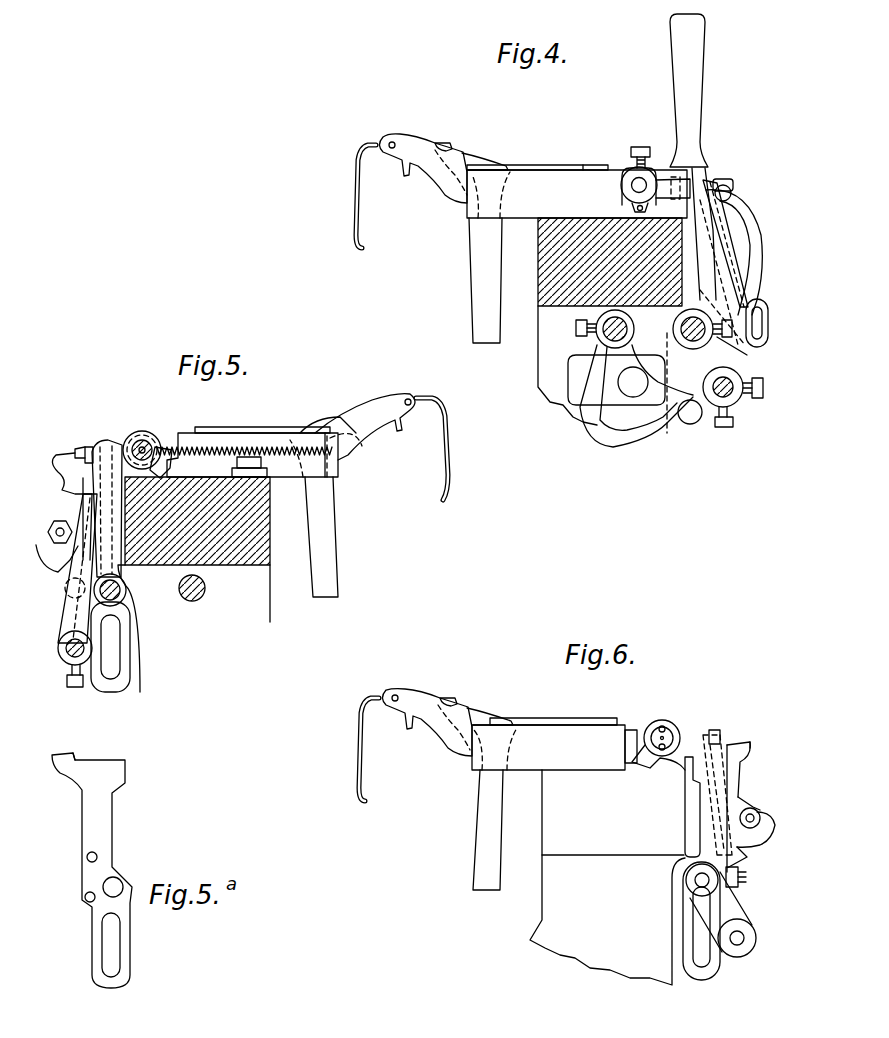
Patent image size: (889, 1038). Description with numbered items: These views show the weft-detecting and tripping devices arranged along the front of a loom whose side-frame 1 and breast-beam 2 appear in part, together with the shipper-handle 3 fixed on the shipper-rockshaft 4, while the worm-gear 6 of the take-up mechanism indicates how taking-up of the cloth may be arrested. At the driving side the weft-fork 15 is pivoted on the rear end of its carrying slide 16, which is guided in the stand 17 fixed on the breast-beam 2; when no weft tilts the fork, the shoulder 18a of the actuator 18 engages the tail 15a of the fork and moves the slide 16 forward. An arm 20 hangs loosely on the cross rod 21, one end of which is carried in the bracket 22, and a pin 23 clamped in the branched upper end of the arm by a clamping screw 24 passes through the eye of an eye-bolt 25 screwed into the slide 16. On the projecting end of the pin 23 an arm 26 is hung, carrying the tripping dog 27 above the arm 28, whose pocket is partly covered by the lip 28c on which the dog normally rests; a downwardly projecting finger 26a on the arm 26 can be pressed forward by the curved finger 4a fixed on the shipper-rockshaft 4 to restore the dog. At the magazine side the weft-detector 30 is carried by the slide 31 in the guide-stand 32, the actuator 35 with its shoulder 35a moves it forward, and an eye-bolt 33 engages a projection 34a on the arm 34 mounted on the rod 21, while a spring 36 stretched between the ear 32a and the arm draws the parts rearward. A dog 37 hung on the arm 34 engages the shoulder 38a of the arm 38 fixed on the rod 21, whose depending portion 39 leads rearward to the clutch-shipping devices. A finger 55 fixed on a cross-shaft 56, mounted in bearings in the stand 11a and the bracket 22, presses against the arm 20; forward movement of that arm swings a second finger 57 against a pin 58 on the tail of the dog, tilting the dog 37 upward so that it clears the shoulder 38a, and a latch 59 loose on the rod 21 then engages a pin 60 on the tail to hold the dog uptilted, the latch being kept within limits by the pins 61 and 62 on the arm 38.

In FIG. 4, the side-frame 1 is at (536, 407).
In FIG. 4, the breast-beam 2 is at (537, 280).
In FIG. 5, the breast-beam 2 is at (271, 534).
In FIG. 6, the breast-beam 2 is at (541, 841).
In FIG. 4, the shipper-handle 3 is at (703, 76).
In FIG. 4, the shipper-rockshaft 4 is at (597, 341).
In FIG. 5, the shipper-rockshaft 4 is at (207, 589).
In FIG. 4, the curved finger 4a is at (633, 451).
In FIG. 5, the worm-gear 6 is at (124, 426).
In FIG. 4, the stand 11a is at (742, 347).
In FIG. 4, the weft-fork 15 is at (355, 178).
In FIG. 4, the tail 15a is at (440, 142).
In FIG. 4, the carrying slide 16 is at (440, 194).
In FIG. 4, the stand 17 is at (466, 214).
In FIG. 4, the actuator 18 is at (471, 263).
In FIG. 4, the shoulder 18a is at (464, 154).
In FIG. 4, the arm 20 is at (651, 172).
In FIG. 4, the rod or shaft 21 is at (674, 337).
In FIG. 5, the rod or shaft 21 is at (125, 590).
In FIG. 6, the rod or shaft 21 is at (684, 881).
In FIG. 6, the bracket 22 is at (685, 842).
In FIG. 4, the pin 23 is at (630, 186).
In FIG. 4, the clamping screw 24 is at (641, 146).
In FIG. 4, the eye-bolt 25 is at (626, 170).
In FIG. 4, the arm 26 is at (722, 172).
In FIG. 4, the finger 26a is at (737, 266).
In FIG. 4, the tripping dog 27 is at (708, 170).
In FIG. 4, the arm 28 is at (750, 189).
In FIG. 4, the lip 28c is at (730, 181).
In FIG. 5, the weft-detector 30 is at (450, 432).
In FIG. 6, the weft-detector 30 is at (360, 740).
In FIG. 5, the carrying-slide 31 is at (355, 450).
In FIG. 6, the carrying-slide 31 is at (443, 750).
In FIG. 5, the guide-stand 32 is at (236, 434).
In FIG. 6, the guide-stand 32 is at (553, 724).
In FIG. 5, the fixed ear 32a is at (333, 472).
In FIG. 5, the eye-bolt 33 is at (163, 446).
In FIG. 6, the eye-bolt 33 is at (637, 729).
In FIG. 5, the arm 34 is at (92, 440).
In FIG. 6, the arm 34 is at (703, 724).
In FIG. 5, the projection 34a is at (140, 438).
In FIG. 6, the projection 34a is at (673, 734).
In FIG. 5, the actuator 35 is at (331, 527).
In FIG. 6, the actuator 35 is at (472, 821).
In FIG. 5, the shoulder 35a is at (337, 418).
In FIG. 6, the shoulder 35a is at (470, 707).
In FIG. 5, the contracting spiral spring 36 is at (282, 462).
In FIG. 5, the dog 37 is at (85, 450).
In FIG. 6, the dog 37 is at (706, 736).
In FIG. 5, the arm 38 is at (59, 484).
In FIG. 5A, the arm 38 is at (72, 780).
In FIG. 6, the arm 38 is at (736, 777).
In FIG. 5, the shoulder 38a is at (74, 454).
In FIG. 5A, the shoulder 38a is at (80, 751).
In FIG. 6, the shoulder 38a is at (766, 738).
In FIG. 5, the depending portion 39 is at (110, 647).
In FIG. 5A, the depending portion 39 is at (90, 968).
In FIG. 4, the finger 55 is at (763, 237).
In FIG. 4, the cross-rod or shaft 56 is at (729, 392).
In FIG. 5, the cross-rod or shaft 56 is at (62, 660).
In FIG. 5, the second finger 57 is at (63, 616).
In FIG. 6, the second finger 57 is at (729, 806).
In FIG. 5, the pin 58 is at (49, 530).
In FIG. 6, the pin 58 is at (761, 818).
In FIG. 5, the latch 59 is at (52, 559).
In FIG. 6, the latch 59 is at (763, 842).
In FIG. 5, the pin 60 is at (65, 591).
In FIG. 6, the pin 60 is at (746, 882).
In FIG. 5A, the pin or projection 61 is at (82, 900).
In FIG. 5A, the pin or projection 62 is at (86, 858).